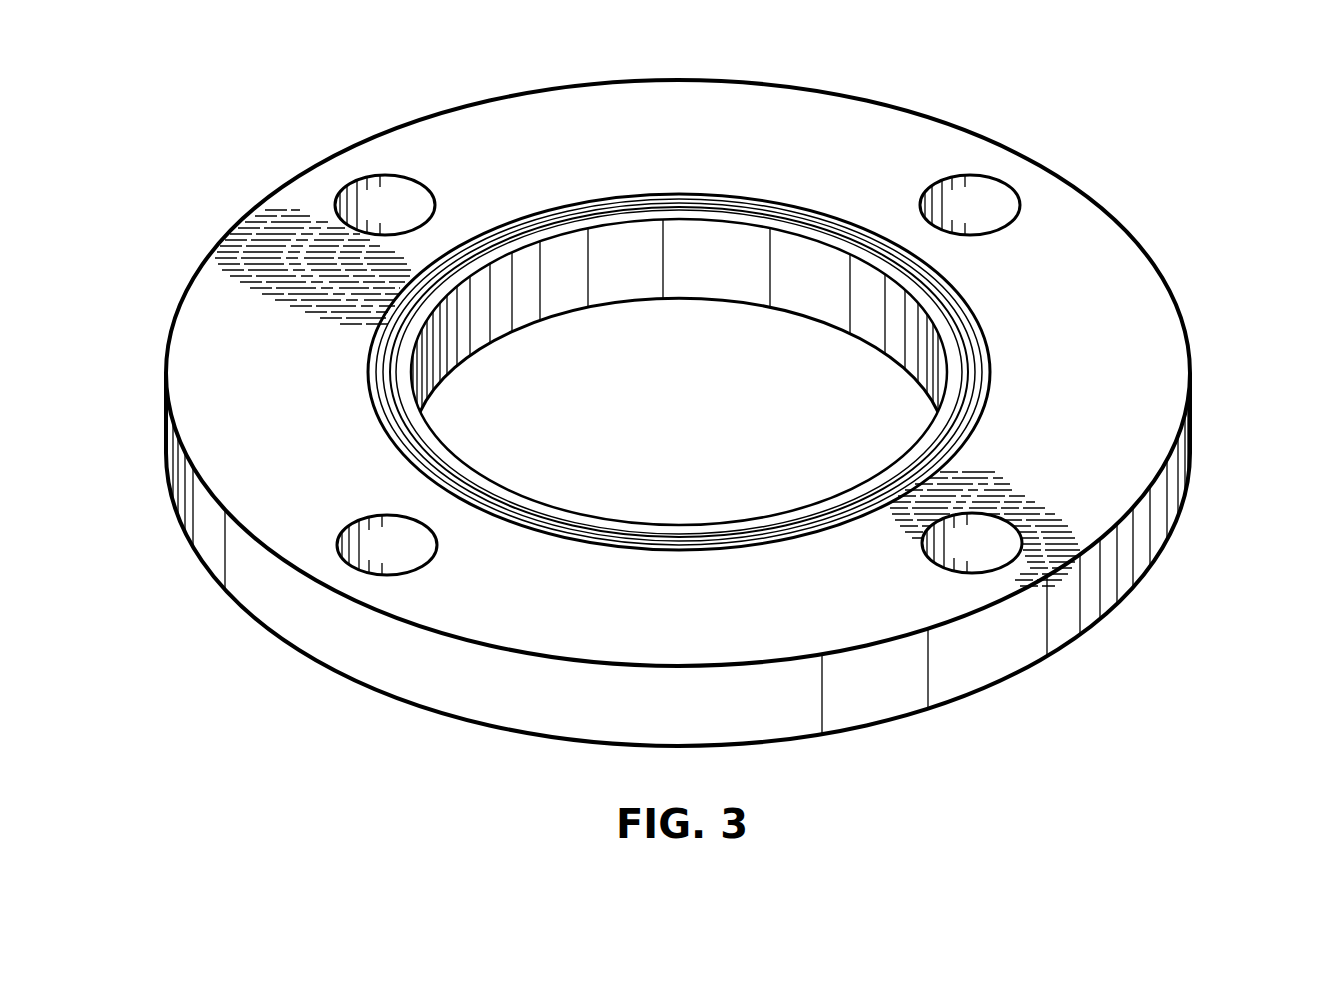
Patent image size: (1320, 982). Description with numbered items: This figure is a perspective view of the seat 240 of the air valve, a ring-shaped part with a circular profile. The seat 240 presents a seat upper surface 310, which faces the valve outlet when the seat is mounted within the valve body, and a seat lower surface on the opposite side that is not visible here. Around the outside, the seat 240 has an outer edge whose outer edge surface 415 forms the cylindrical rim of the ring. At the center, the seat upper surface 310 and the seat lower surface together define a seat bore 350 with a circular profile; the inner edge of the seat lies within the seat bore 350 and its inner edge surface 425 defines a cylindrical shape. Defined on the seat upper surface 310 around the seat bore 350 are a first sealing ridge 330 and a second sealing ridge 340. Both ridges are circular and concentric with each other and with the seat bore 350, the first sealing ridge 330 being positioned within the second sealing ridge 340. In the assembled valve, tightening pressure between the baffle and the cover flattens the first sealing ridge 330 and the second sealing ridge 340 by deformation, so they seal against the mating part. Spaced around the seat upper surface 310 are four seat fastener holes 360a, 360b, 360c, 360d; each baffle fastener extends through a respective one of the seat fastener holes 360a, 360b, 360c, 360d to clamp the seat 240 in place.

The seat 240 is at (1050, 103).
The seat upper surface 310 is at (647, 364).
The outer edge surface 415 is at (678, 559).
The inner edge surface 425 is at (679, 372).
The first sealing ridge 330 is at (987, 383).
The second sealing ridge 340 is at (970, 427).
The seat bore 350 is at (730, 251).
The seat fastener hole 360a is at (378, 205).
The seat fastener hole 360b is at (1000, 204).
The seat fastener hole 360c is at (993, 547).
The seat fastener hole 360d is at (380, 548).